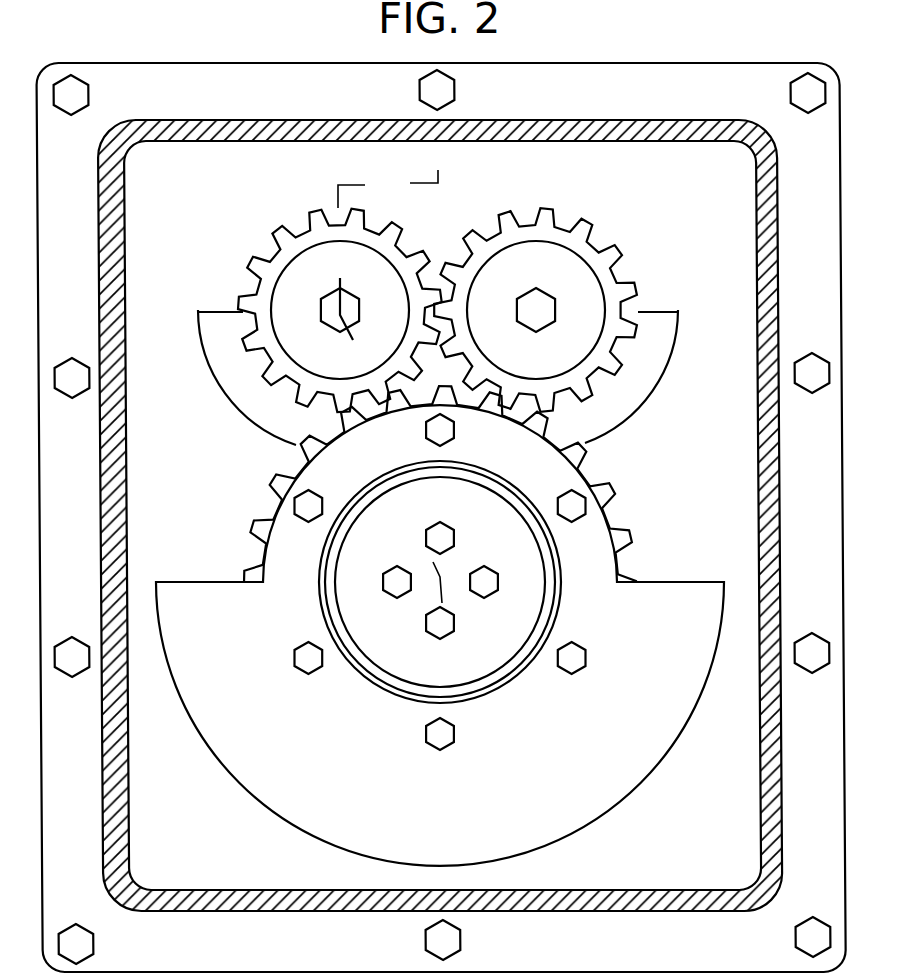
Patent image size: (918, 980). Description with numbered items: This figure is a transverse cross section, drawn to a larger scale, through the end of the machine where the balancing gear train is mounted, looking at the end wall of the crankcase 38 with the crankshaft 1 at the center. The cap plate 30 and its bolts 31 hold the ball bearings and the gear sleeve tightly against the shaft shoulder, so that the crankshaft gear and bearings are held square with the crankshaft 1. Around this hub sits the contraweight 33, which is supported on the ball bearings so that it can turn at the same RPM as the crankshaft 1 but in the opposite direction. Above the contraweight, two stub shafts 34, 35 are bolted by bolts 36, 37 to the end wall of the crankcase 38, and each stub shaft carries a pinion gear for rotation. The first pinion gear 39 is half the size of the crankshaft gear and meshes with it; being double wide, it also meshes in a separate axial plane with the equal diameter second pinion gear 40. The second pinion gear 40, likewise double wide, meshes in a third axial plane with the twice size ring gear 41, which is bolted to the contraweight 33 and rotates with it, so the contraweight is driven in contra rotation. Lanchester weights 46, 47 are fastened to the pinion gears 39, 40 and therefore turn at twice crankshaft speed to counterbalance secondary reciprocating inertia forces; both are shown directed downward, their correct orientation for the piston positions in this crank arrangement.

The crankshaft 1 is at (436, 75).
The cap plate 30 is at (495, 643).
The bolts 31 is at (436, 630).
The contraweight 33 is at (607, 792).
The stub shaft 34 is at (210, 265).
The stub shaft 35 is at (611, 206).
The bolt 36 is at (328, 298).
The bolt 37 is at (528, 302).
The crankcase 38 is at (194, 365).
The first pinion gear 39 is at (268, 237).
The second pinion gear 40 is at (607, 262).
The ring gear 41 is at (628, 520).
The Lanchester weight 46 is at (257, 410).
The Lanchester weight 47 is at (632, 393).